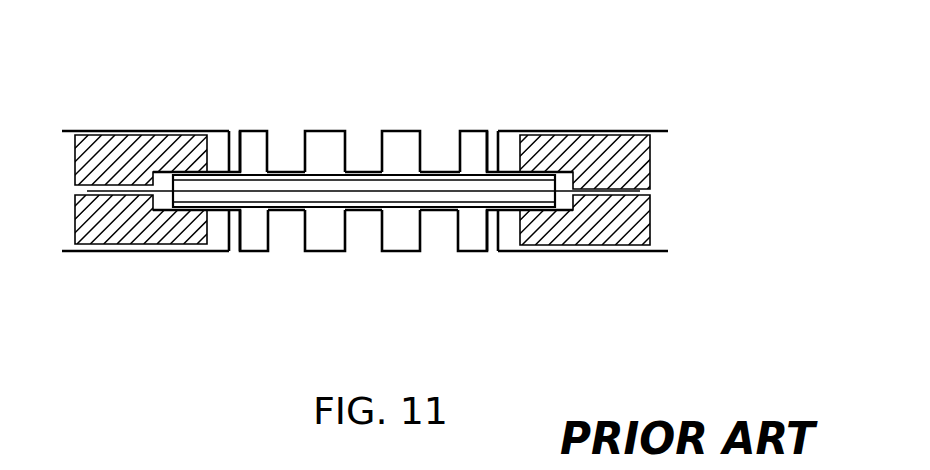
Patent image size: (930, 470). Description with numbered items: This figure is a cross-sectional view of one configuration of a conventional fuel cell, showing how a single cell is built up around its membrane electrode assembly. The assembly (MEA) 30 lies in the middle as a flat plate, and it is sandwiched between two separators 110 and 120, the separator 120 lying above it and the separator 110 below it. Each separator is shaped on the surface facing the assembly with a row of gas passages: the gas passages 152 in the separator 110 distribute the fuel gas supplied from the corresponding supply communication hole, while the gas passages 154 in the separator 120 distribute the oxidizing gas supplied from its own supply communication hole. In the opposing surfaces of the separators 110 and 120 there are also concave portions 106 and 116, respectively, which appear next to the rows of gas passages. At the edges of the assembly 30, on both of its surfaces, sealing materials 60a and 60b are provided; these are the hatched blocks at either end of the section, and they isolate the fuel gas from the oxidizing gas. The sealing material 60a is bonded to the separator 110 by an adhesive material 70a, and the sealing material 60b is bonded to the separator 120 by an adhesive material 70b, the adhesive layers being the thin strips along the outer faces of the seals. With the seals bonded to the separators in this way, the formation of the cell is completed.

The assembly (MEA) 30 is at (280, 191).
The sealing material 60a is at (167, 227).
The sealing material 60b is at (163, 152).
The adhesive material 70a is at (112, 251).
The adhesive material 70b is at (121, 131).
The concave portion 106 is at (509, 172).
The separator 110 is at (648, 270).
The concave portion 116 is at (513, 212).
The separator 120 is at (636, 113).
The gas passage 152 is at (465, 245).
The gas passage 154 is at (252, 146).